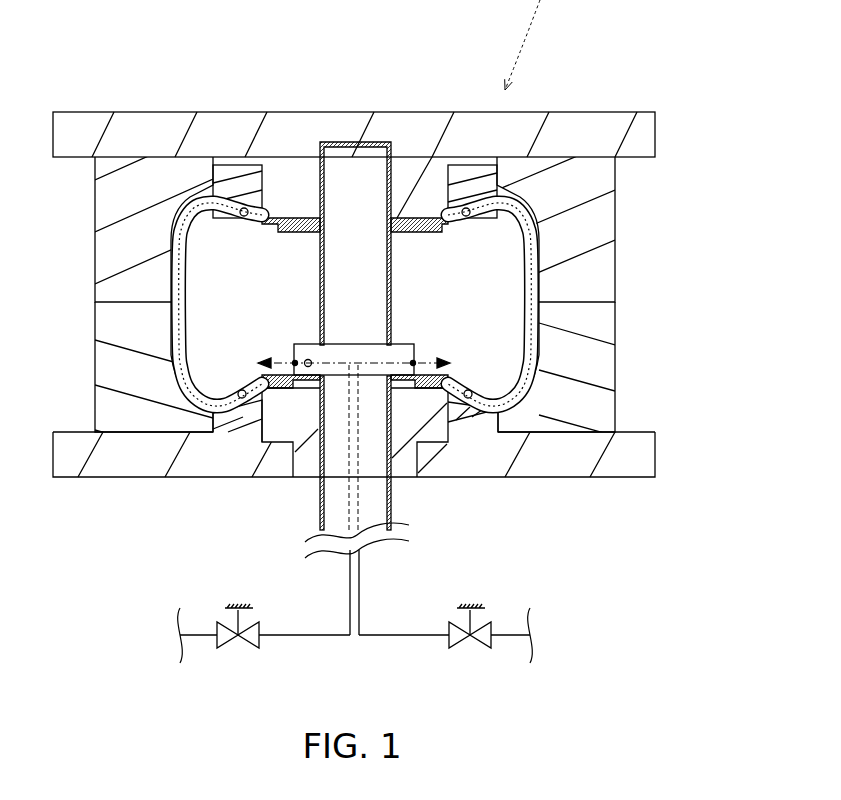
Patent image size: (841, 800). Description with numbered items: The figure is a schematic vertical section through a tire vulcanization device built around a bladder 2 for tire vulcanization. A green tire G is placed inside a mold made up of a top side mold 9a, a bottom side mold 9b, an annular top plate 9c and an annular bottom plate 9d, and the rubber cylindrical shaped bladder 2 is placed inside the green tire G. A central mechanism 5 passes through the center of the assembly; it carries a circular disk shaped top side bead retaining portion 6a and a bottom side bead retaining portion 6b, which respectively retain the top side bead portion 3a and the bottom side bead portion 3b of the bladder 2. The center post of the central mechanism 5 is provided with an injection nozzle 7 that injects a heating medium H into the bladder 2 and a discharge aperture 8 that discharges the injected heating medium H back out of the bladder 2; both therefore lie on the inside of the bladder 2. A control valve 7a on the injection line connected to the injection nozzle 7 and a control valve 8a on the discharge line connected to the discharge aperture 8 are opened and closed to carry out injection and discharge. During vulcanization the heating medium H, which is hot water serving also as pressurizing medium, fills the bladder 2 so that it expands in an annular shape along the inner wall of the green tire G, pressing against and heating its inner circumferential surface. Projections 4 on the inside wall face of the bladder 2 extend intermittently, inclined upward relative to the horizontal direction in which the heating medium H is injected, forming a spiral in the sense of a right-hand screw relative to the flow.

The green tire G is at (186, 205).
The bladder 2 is at (513, 294).
The top side bead portion 3a is at (278, 233).
The bottom side bead portion 3b is at (432, 435).
The projections 4 is at (199, 228).
The central mechanism 5 is at (395, 187).
The top side bead retaining portion 6a is at (300, 215).
The bottom side bead retaining portion 6b is at (395, 455).
The injection nozzle 7 is at (416, 355).
The control valve 7a is at (490, 628).
The discharge aperture 8 is at (313, 356).
The control valve 8a is at (262, 628).
The top side mold 9a is at (612, 260).
The bottom side mold 9b is at (612, 372).
The annular top plate 9c is at (240, 167).
The annular bottom plate 9d is at (242, 418).
The heating medium H is at (354, 365).